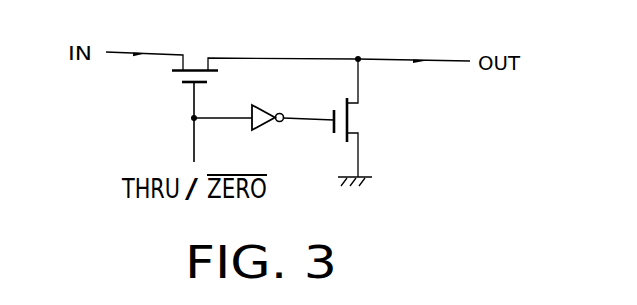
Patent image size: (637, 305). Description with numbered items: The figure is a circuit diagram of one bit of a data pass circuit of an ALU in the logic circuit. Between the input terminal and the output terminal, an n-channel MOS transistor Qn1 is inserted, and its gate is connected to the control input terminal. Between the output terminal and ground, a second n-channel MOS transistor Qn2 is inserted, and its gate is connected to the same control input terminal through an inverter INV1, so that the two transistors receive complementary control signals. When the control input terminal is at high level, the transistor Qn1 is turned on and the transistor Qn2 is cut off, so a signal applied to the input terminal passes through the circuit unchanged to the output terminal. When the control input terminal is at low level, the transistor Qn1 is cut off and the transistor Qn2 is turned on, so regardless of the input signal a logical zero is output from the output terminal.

The n-channel MOS transistor Qn1 is at (195, 66).
The n-channel MOS transistor Qn2 is at (356, 121).
The inverter INV1 is at (293, 101).